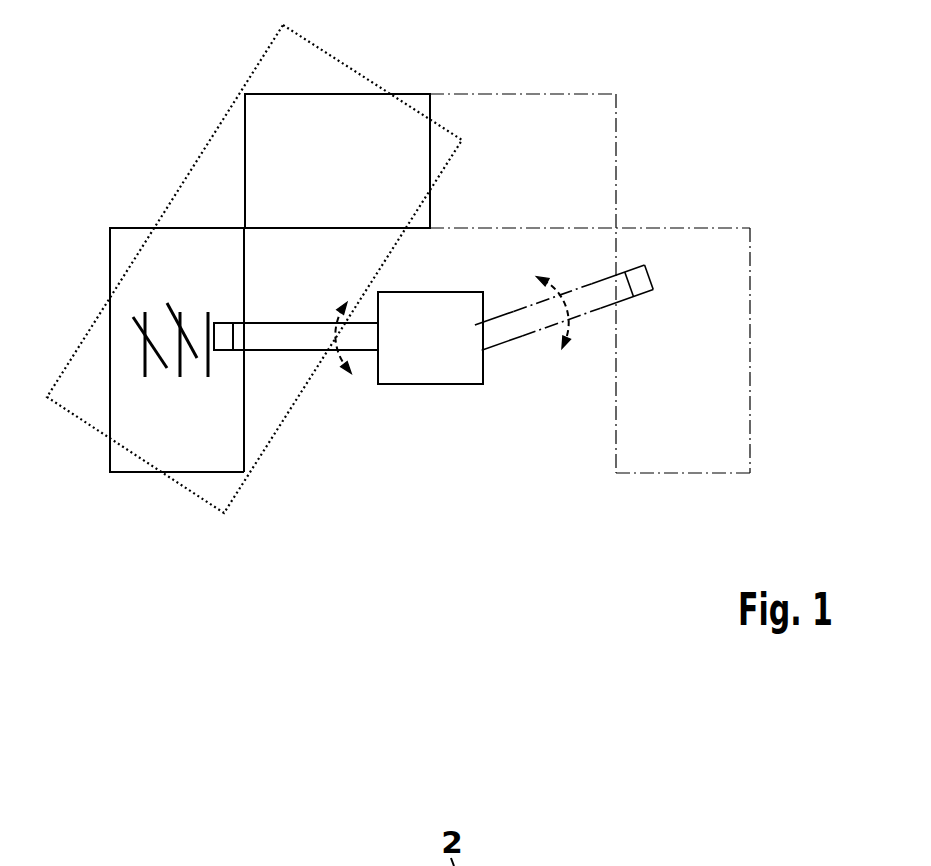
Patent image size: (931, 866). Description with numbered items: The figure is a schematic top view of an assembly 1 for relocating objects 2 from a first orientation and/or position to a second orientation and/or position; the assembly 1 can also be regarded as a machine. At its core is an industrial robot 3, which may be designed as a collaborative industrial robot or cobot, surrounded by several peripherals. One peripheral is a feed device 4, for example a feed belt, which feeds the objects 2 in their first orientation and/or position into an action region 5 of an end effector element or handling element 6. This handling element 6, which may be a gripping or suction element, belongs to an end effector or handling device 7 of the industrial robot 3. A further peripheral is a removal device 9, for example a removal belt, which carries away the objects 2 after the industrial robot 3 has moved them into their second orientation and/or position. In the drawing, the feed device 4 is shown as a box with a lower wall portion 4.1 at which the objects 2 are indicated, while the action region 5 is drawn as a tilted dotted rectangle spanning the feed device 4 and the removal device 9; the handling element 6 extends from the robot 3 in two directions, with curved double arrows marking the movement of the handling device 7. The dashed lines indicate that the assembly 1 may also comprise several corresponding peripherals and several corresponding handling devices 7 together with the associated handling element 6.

The assembly 1 is at (150, 92).
The objects 2 is at (143, 364).
The industrial robot 3 is at (491, 419).
The feed device 4 is at (110, 460).
The housing wall 4.1 is at (187, 453).
The action region 5 is at (182, 198).
The end effector element or handling element 6 is at (230, 355).
The end effector or handling device 7 is at (292, 357).
The removal device 9 is at (352, 94).